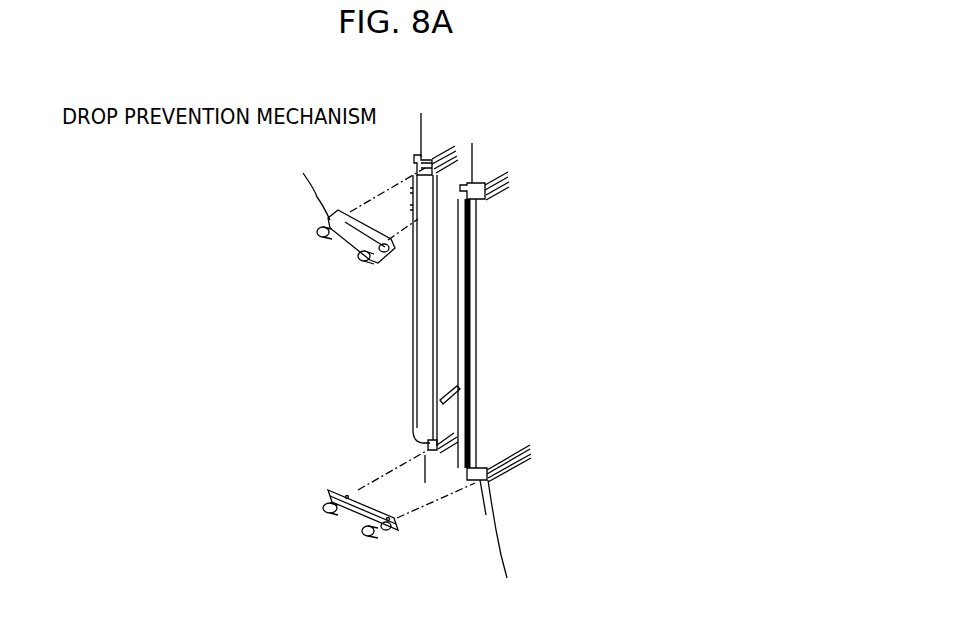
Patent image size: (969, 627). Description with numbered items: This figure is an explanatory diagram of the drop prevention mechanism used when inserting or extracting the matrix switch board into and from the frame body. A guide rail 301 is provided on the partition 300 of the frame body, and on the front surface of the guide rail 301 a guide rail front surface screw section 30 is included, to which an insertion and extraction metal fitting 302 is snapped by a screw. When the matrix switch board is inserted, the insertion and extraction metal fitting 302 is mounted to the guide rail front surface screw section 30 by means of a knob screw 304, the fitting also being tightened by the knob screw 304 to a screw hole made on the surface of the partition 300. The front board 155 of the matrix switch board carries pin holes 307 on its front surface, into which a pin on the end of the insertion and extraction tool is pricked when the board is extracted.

The partition 300 is at (543, 338).
The front board 155 is at (415, 340).
The pin hole 307 is at (420, 192).
The guide rail 301 is at (515, 473).
The guide rail front surface screw section 30 is at (647, 545).
The insertion and extraction metal fitting 302 is at (335, 255).
The knob screw 304 is at (328, 500).